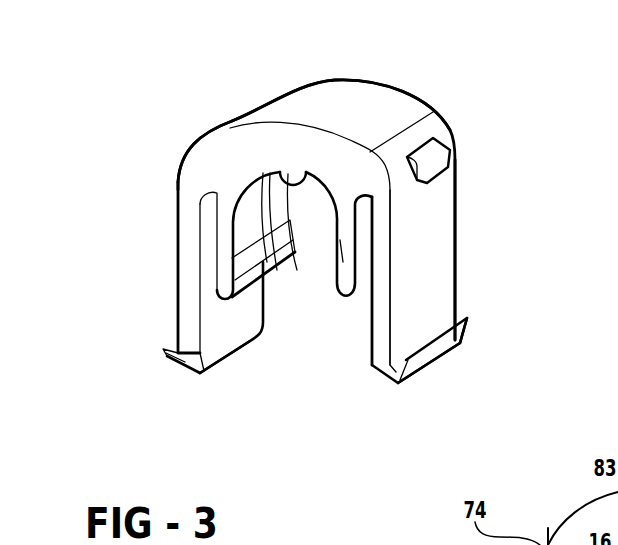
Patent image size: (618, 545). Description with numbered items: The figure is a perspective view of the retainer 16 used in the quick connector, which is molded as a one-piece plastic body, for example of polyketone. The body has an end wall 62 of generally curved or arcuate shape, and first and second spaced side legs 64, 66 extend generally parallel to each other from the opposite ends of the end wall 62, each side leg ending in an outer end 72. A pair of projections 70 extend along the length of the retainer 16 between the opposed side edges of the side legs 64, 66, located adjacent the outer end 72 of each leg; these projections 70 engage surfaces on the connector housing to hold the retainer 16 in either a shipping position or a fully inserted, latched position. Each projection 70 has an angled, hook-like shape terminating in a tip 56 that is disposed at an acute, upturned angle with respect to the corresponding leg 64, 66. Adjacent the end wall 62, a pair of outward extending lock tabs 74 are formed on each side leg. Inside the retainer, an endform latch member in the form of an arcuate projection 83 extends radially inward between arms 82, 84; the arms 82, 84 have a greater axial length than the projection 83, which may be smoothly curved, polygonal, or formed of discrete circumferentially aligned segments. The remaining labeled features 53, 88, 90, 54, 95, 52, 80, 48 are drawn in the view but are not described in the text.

The retainer 16 is at (167, 109).
The end wall 62 is at (390, 98).
The upper corner of clip body 53 is at (178, 183).
The notch 88 is at (305, 172).
The lock tabs 74 is at (440, 157).
The side flange 90 is at (455, 205).
The arm 84 is at (200, 200).
The fold line of left leg 54 is at (200, 248).
The arm 82 is at (347, 248).
The second side leg 66 is at (190, 297).
The first side leg 64 is at (447, 266).
The tip 56 is at (173, 350).
The tab edge 95 is at (442, 345).
The bent retention plate 52 is at (233, 298).
The arcuate projection 83 is at (273, 266).
The central tongue 80 is at (322, 321).
The outer end 72 is at (200, 376).
The projections 70 is at (167, 358).
The adjacent figure element 48 is at (600, 544).